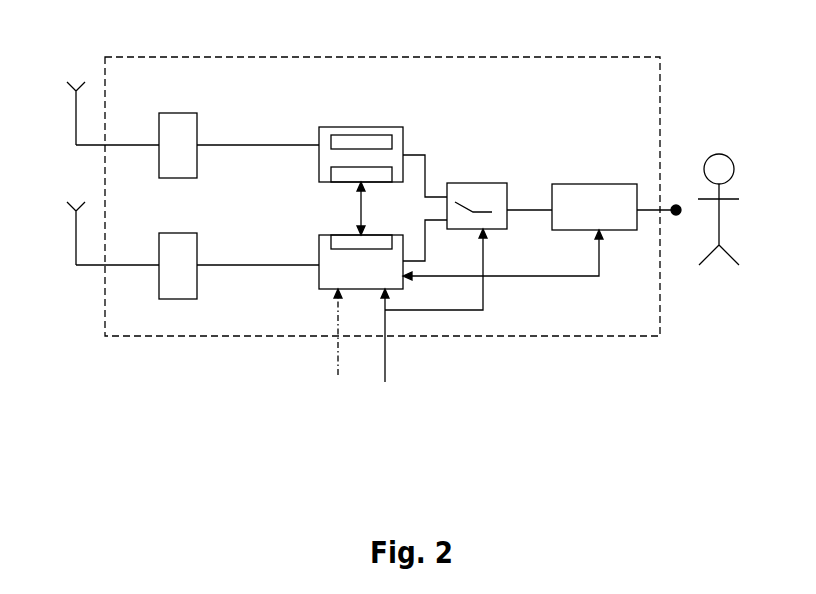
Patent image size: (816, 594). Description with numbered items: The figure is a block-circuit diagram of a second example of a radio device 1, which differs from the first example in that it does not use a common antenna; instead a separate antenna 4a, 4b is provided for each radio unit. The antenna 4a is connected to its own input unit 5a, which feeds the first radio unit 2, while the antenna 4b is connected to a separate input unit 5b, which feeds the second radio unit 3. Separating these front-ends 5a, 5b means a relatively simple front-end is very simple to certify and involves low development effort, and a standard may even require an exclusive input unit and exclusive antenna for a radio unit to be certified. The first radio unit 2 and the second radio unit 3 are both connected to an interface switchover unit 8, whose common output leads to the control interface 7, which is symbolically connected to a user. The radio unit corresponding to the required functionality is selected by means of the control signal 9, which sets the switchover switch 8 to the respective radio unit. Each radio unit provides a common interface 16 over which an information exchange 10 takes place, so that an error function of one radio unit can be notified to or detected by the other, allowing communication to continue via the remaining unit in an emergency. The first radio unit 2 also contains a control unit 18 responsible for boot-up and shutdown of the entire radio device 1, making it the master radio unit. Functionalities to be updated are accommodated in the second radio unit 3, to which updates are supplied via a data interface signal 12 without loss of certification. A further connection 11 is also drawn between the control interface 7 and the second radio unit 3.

The radio device 1 is at (660, 57).
The first radio unit 2 is at (385, 130).
The second radio unit 3 is at (328, 280).
The antenna 4a is at (75, 112).
The antenna 4b is at (75, 233).
The input unit 5a is at (197, 123).
The input unit 5b is at (197, 243).
The control interface 7 is at (572, 187).
The interface switchover unit 8 is at (498, 192).
The control signal 9 is at (385, 368).
The information exchange 10 is at (365, 210).
The feedback line 11 is at (523, 277).
The data interface signal 12 is at (338, 378).
The common interface 16 is at (335, 173).
The control unit 18 is at (340, 139).